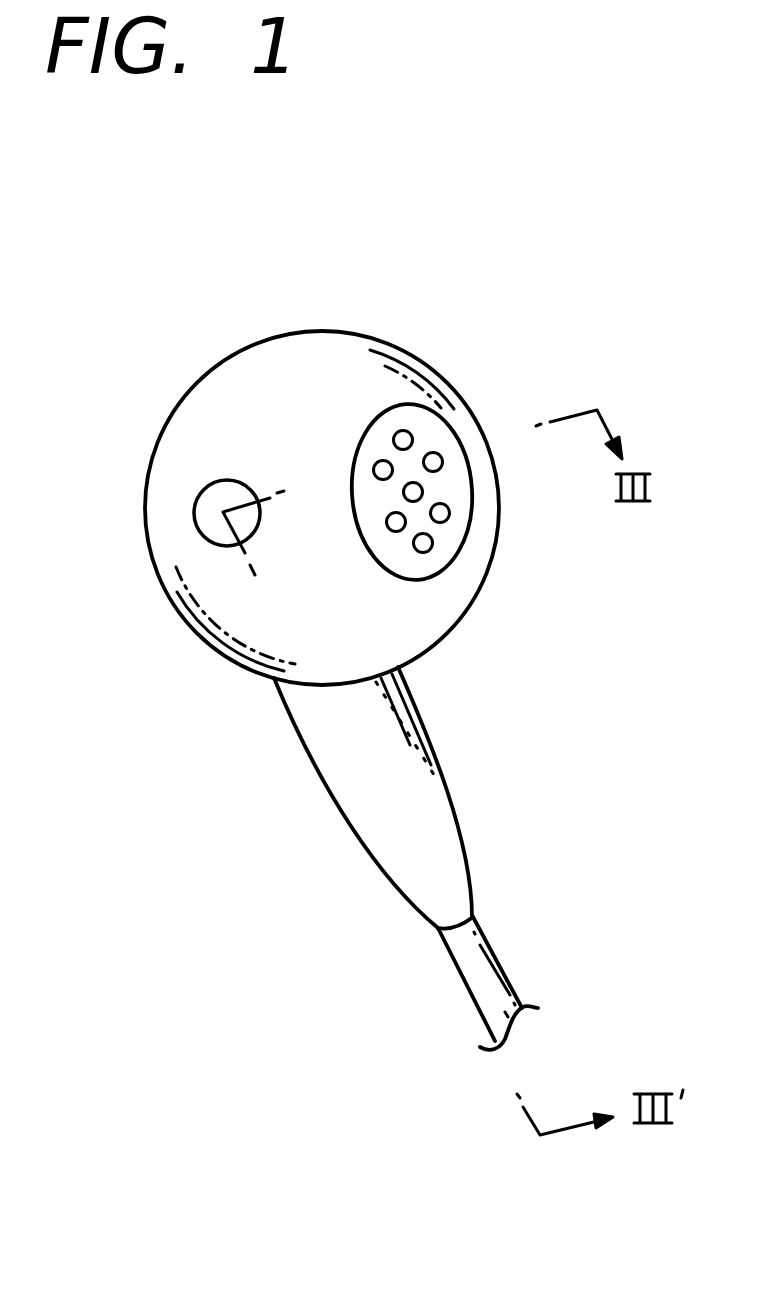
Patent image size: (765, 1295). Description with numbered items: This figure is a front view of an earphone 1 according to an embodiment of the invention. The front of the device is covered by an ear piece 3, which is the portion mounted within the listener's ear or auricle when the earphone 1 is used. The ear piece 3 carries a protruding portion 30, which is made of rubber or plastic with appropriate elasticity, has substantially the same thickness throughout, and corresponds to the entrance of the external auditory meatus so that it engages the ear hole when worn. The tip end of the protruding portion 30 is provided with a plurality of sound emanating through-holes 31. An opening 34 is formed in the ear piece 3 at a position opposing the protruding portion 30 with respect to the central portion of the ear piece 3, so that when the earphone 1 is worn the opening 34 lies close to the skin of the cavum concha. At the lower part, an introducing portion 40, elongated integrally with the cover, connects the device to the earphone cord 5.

The earphone 1 is at (301, 271).
The ear piece 3 is at (230, 620).
The protruding portion 30 is at (377, 435).
The sound emanating through-holes 31 is at (450, 516).
The opening 34 is at (203, 511).
The introducing portion 40 is at (432, 817).
The earphone cord 5 is at (482, 981).